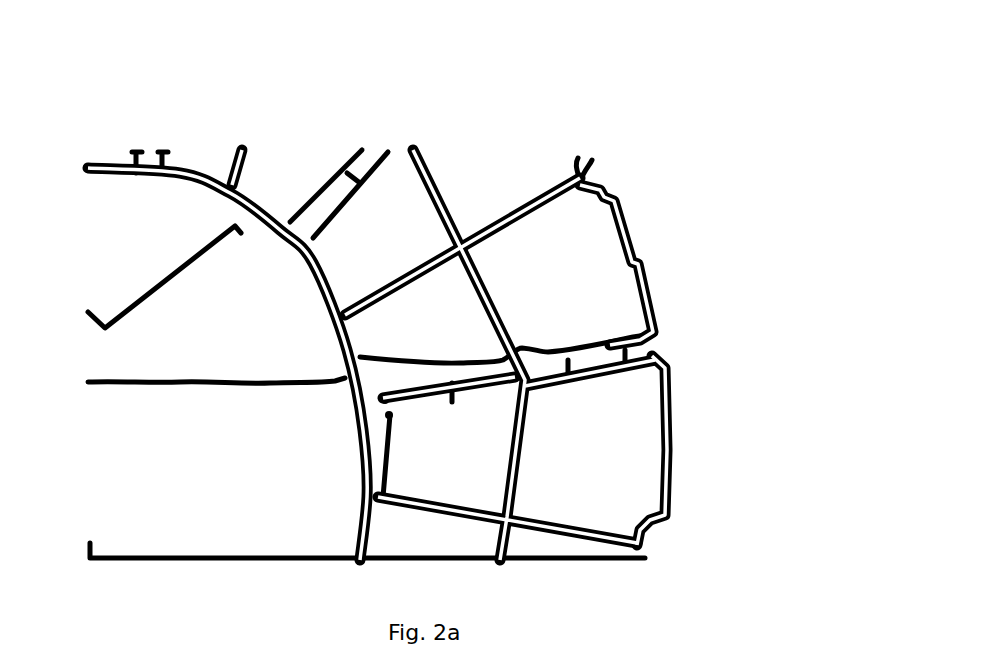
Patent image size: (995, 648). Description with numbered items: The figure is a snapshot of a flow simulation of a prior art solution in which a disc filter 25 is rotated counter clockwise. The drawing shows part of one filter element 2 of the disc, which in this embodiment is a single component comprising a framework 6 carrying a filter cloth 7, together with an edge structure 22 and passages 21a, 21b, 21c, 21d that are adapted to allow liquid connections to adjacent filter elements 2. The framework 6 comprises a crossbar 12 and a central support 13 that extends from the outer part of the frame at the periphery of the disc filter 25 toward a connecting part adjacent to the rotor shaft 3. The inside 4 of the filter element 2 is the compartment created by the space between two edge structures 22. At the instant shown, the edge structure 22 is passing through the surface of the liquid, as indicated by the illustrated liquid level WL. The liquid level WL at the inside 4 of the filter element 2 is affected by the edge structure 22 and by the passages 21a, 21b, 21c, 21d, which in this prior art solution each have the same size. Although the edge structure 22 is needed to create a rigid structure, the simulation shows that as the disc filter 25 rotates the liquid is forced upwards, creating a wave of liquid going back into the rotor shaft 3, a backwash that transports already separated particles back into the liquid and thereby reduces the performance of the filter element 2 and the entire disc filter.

The filter element 2 is at (608, 138).
The rotor shaft 3 is at (155, 212).
The inside 4 is at (339, 199).
The framework 6 is at (643, 263).
The filter cloth 7 is at (557, 303).
The crossbar 12 is at (495, 326).
The central support 13 is at (550, 205).
The passage 21a is at (595, 370).
The passage 21b is at (545, 383).
The passage 21c is at (490, 398).
The passage 21d is at (422, 403).
The edge structure 22 is at (613, 360).
The disc filter 25 is at (532, 85).
The liquid level WL is at (330, 383).